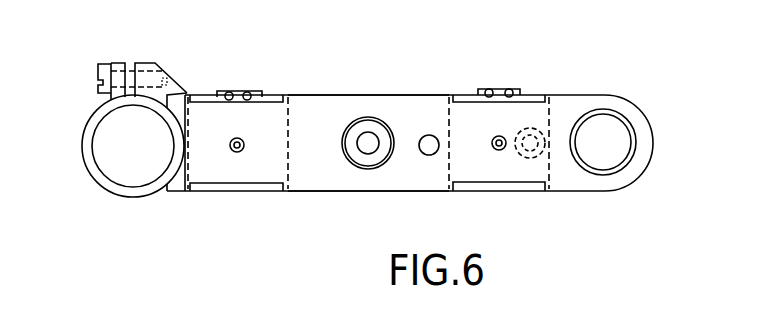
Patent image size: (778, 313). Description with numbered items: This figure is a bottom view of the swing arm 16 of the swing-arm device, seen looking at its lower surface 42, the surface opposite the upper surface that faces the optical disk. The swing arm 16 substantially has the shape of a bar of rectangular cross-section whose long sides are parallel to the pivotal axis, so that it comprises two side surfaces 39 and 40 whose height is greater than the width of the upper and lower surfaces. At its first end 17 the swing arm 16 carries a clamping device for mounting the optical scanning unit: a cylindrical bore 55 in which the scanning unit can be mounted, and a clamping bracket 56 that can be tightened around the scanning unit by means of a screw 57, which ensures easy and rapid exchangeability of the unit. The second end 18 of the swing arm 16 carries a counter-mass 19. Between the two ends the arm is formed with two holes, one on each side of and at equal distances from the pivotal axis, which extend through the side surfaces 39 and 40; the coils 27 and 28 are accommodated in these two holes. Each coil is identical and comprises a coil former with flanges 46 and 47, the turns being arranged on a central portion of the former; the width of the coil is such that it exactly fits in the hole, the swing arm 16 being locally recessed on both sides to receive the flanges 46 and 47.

The swing arm 16 is at (409, 87).
The first end 17 is at (82, 155).
The second end 18 is at (642, 130).
The counter-mass 19 is at (608, 157).
The coil 27 is at (221, 195).
The coil 28 is at (498, 194).
The side surface 39 is at (322, 95).
The side surface 40 is at (340, 192).
The lower surface 42 is at (313, 178).
The flange 46 is at (259, 95).
The flange 47 is at (250, 187).
The cylindrical bore 55 is at (110, 157).
The clamping bracket 56 is at (95, 127).
The screw 57 is at (105, 72).